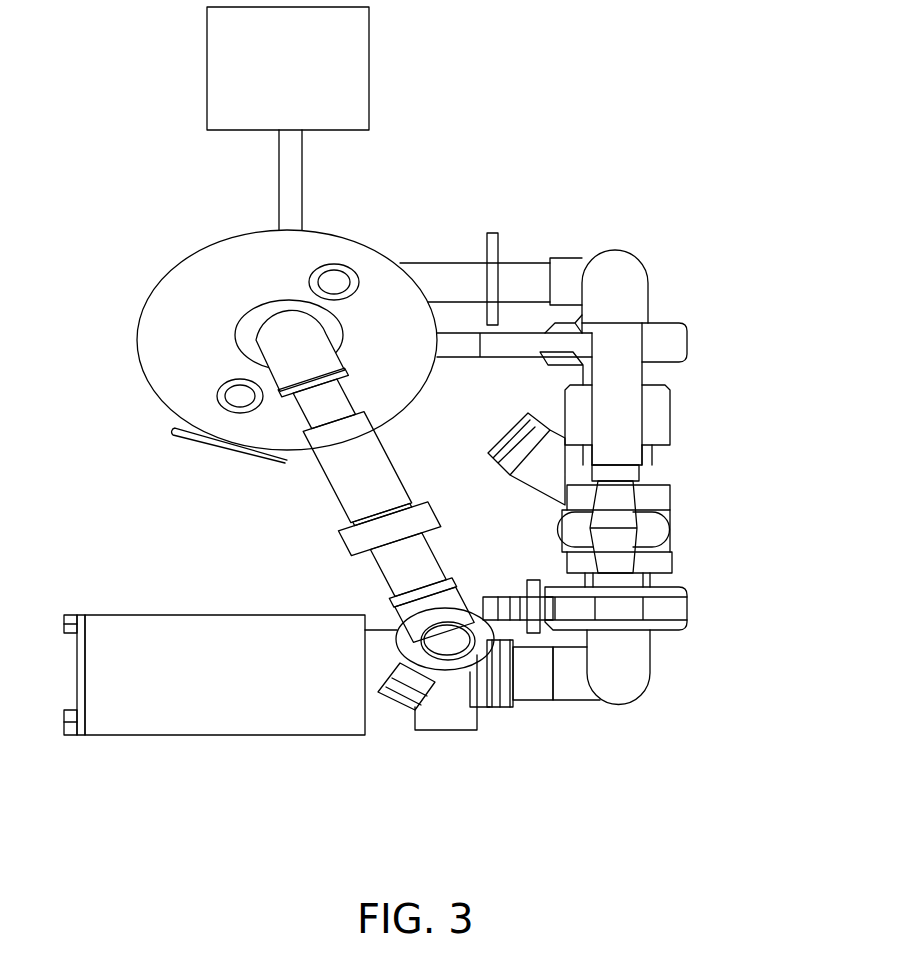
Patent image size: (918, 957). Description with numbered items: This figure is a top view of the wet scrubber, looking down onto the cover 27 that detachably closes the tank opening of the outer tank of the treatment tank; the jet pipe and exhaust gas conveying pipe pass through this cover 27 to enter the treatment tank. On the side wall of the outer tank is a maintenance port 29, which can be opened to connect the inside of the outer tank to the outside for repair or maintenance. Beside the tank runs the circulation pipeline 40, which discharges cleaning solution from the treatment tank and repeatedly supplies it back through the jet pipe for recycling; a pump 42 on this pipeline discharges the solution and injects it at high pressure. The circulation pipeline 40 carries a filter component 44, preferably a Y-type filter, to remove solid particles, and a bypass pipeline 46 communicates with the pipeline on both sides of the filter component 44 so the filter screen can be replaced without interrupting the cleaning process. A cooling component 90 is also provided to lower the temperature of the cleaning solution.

The cooling component 90 is at (353, 65).
The cover 27 is at (182, 295).
The maintenance port 29 is at (207, 443).
The circulation pipeline 40 is at (360, 475).
The pump 42 is at (197, 705).
The filter component 44 is at (643, 478).
The bypass pipeline 46 is at (613, 430).